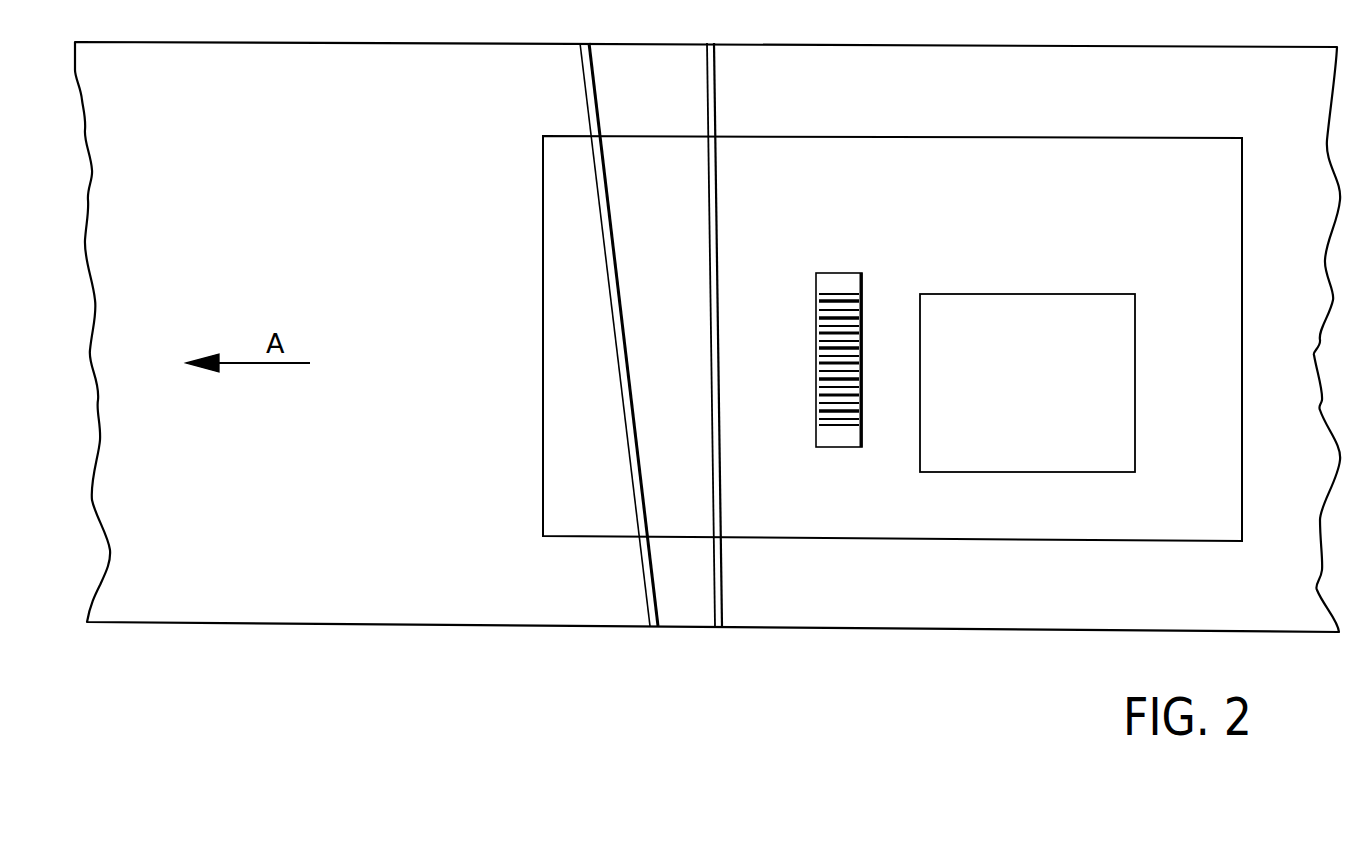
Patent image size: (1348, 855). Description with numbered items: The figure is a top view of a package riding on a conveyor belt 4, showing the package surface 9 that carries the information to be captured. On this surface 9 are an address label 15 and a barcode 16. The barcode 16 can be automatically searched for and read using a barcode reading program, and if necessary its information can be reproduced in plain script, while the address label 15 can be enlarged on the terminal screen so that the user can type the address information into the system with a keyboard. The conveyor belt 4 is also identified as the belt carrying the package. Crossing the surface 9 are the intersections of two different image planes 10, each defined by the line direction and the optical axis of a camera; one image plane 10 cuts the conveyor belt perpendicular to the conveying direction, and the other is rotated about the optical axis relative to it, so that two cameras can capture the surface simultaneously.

The conveyor belt 4 is at (408, 577).
The package surface 9 is at (1188, 205).
The image plane 10 is at (647, 587).
The address label 15 is at (1113, 433).
The barcode 16 is at (840, 435).